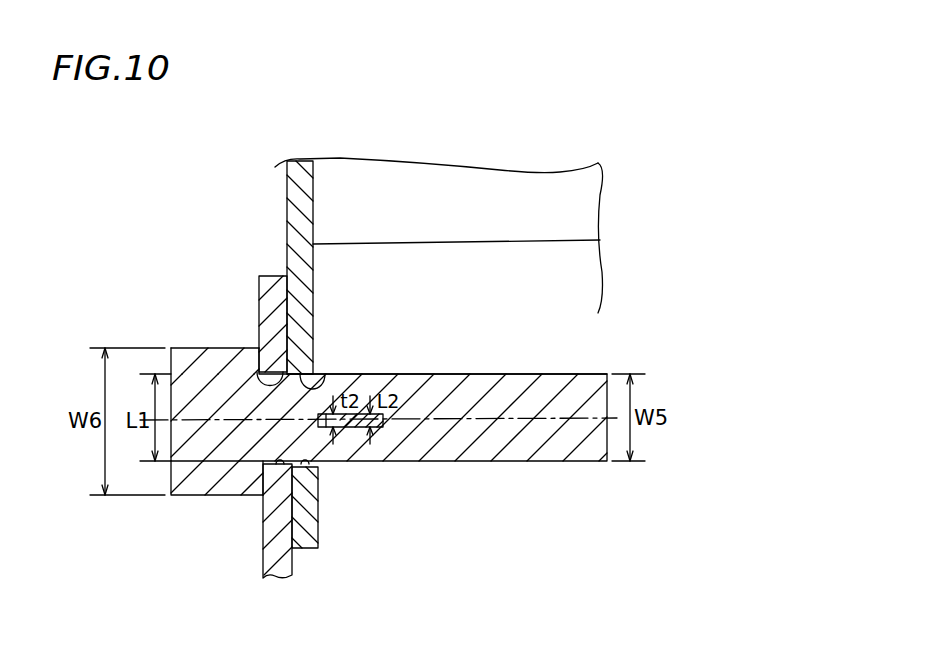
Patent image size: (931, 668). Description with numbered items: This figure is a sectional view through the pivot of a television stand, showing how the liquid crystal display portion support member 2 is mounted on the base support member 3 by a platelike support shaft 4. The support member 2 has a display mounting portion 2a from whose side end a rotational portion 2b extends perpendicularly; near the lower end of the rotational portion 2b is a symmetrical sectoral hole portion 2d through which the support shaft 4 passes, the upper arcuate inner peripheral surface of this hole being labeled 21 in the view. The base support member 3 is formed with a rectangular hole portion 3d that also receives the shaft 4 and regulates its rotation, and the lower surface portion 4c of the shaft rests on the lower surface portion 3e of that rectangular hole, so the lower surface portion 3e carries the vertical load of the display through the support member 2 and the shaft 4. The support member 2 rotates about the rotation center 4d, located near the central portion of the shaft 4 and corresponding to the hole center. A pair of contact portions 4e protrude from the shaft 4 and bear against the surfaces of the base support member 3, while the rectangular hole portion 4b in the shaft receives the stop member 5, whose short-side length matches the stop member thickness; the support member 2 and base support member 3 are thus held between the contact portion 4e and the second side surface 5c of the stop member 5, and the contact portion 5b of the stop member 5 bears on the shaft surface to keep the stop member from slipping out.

The liquid crystal display portion support member 2 is at (552, 207).
The display mounting portion 2a is at (500, 208).
The rotational portion 2b is at (300, 182).
The symmetrical sectoral hole portion 2d is at (325, 392).
The contact portion 21 is at (318, 383).
The base support member 3 is at (278, 277).
The rectangular hole portion 3d is at (262, 380).
The lower surface portion 3e is at (268, 466).
The platelike support shaft 4 is at (526, 418).
The rectangular hole portion 4b is at (385, 412).
The lower surface portion 4c is at (262, 492).
The rotation center 4d is at (588, 417).
The contact portion 4e is at (182, 347).
The stop member 5 is at (350, 429).
The contact portion 5b is at (378, 429).
The second side surface 5c is at (322, 430).